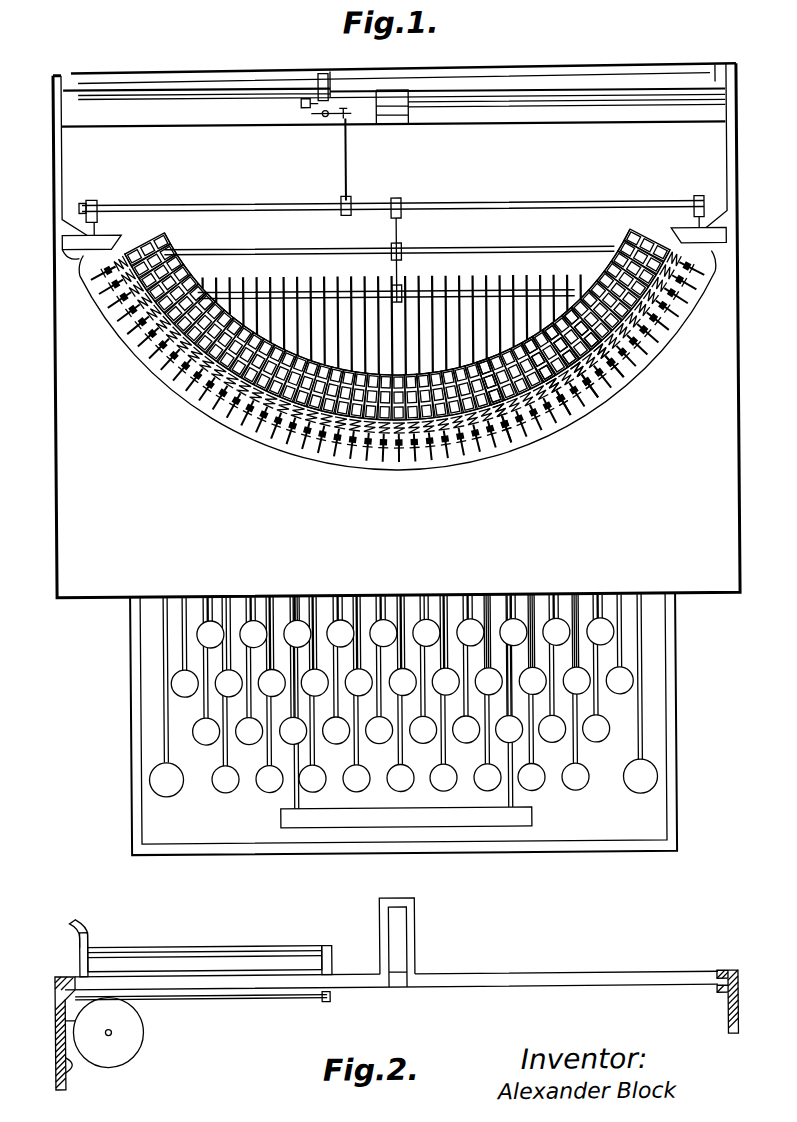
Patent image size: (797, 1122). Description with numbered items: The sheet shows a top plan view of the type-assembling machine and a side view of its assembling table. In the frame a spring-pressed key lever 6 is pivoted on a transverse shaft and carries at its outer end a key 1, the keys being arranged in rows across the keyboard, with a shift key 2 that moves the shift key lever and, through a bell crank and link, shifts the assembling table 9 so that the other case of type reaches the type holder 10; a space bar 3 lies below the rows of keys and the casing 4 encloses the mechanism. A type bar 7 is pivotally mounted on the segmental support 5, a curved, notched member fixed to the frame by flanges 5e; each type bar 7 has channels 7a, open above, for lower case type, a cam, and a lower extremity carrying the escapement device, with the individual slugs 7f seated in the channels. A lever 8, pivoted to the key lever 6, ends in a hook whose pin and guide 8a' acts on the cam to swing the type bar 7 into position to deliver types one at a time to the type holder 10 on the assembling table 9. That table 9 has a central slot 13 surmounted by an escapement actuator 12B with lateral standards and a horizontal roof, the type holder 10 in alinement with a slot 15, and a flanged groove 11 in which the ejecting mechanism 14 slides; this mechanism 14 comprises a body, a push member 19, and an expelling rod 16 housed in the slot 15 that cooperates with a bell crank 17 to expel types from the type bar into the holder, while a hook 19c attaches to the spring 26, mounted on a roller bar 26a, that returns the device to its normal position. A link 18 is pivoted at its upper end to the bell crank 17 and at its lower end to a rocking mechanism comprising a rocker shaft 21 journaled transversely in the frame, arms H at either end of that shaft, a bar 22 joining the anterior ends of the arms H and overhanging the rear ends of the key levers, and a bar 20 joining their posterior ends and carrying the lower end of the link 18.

In FIG. 1, the key 1 is at (619, 672).
In FIG. 1, the shift key 2 is at (168, 791).
In FIG. 1, the space bar 3 is at (475, 814).
In FIG. 1, the frame 4 is at (708, 517).
In FIG. 2, the frame 4 is at (55, 1008).
In FIG. 1, the segmental support 5 is at (87, 256).
In FIG. 1, the flanges 5e is at (62, 251).
In FIG. 1, the key lever 6 is at (483, 281).
In FIG. 1, the type bar 7 is at (156, 243).
In FIG. 1, the channels 7a is at (300, 418).
In FIG. 1, the type slug stem 7f is at (240, 401).
In FIG. 1, the lever 8 is at (168, 373).
In FIG. 1, the pin and guide 8a' is at (382, 382).
In FIG. 1, the assembling table 9 is at (636, 68).
In FIG. 2, the assembling table 9 is at (498, 975).
In FIG. 1, the type holder 10 is at (581, 99).
In FIG. 1, the flanged groove 11 is at (500, 79).
In FIG. 1, the escapement actuator 12B is at (399, 96).
In FIG. 2, the escapement actuator 12B is at (404, 899).
In FIG. 2, the central slot 13 is at (393, 960).
In FIG. 1, the ejecting mechanism 14 is at (208, 80).
In FIG. 2, the ejecting mechanism 14 is at (265, 953).
In FIG. 1, the slot 15 is at (302, 108).
In FIG. 1, the expelling rod 16 is at (332, 98).
In FIG. 1, the bell crank 17 is at (319, 119).
In FIG. 1, the link 18 is at (346, 163).
In FIG. 2, the push member 19 is at (77, 937).
In FIG. 2, the hook 19c is at (327, 996).
In FIG. 1, the bar 20 is at (446, 204).
In FIG. 1, the rocker shaft 21 is at (443, 252).
In FIG. 1, the bar 22 is at (308, 294).
In FIG. 2, the spring 26 is at (138, 1031).
In FIG. 2, the roller bar 26a is at (240, 999).
In FIG. 1, the arms H is at (60, 236).